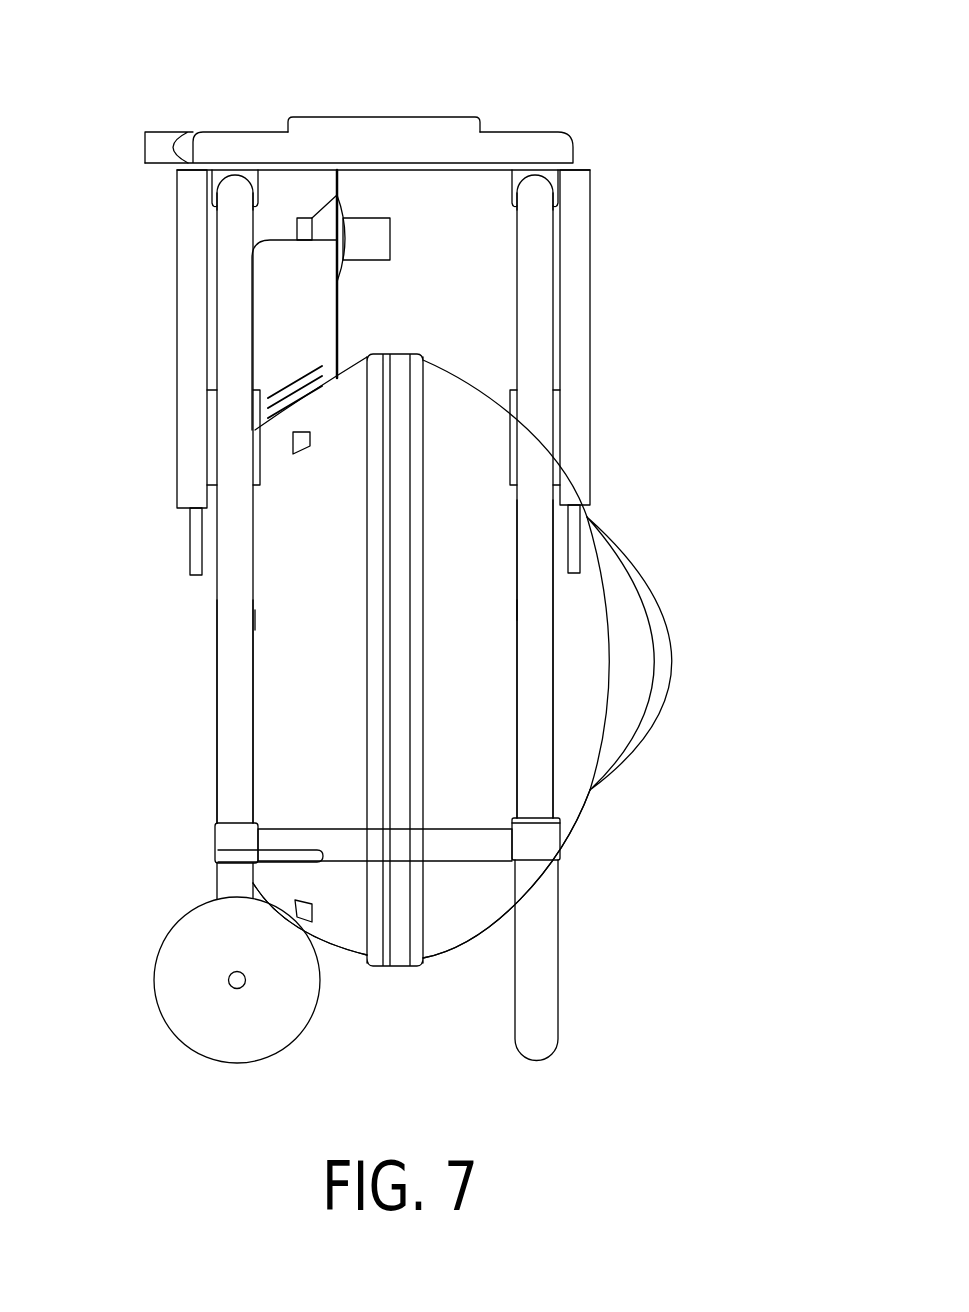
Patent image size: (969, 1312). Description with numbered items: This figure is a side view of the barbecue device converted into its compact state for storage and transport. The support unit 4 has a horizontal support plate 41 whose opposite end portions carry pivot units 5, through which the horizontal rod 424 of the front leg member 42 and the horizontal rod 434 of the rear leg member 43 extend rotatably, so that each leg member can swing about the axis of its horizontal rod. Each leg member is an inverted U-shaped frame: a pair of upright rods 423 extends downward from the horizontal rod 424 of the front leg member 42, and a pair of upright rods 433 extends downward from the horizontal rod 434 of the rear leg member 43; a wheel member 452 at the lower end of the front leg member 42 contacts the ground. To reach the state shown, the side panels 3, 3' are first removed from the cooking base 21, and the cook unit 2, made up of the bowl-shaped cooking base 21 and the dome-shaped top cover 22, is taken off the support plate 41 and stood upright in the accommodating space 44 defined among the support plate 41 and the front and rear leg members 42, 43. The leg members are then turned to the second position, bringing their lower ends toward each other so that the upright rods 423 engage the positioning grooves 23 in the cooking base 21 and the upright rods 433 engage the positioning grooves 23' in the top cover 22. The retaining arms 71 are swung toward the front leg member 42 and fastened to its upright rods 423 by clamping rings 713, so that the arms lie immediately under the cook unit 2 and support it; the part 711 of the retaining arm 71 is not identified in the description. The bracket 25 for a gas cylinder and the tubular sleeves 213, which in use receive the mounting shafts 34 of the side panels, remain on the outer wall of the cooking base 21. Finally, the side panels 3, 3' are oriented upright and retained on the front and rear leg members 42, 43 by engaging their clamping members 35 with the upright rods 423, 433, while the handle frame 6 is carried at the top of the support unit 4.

The cook unit 2 is at (590, 793).
The cooking base 21 is at (268, 752).
The top cover 22 is at (568, 800).
The positioning grooves 23 is at (203, 619).
The positioning grooves 23' is at (646, 563).
The tubular sleeves 213 is at (293, 445).
The bracket 25 is at (312, 323).
The side panel 3 is at (631, 337).
The side panel 3' is at (155, 339).
The mounting shafts 34 is at (197, 545).
The clamping members 35 is at (262, 382).
The support unit 4 is at (507, 127).
The horizontal support plate 41 is at (463, 147).
The front leg member 42 is at (240, 654).
The upright rods 423 is at (240, 707).
The horizontal rod 424 is at (238, 185).
The rear leg member 43 is at (560, 965).
The upright rods 433 is at (547, 647).
The horizontal rod 434 is at (530, 187).
The accommodating space 44 is at (447, 292).
The wheel members 452 is at (212, 1020).
The pivot units 5 is at (257, 180).
The handle frame 6 is at (152, 143).
The retaining arms 71 is at (472, 853).
The coupling block 711 is at (538, 847).
The clamping rings 713 is at (223, 837).